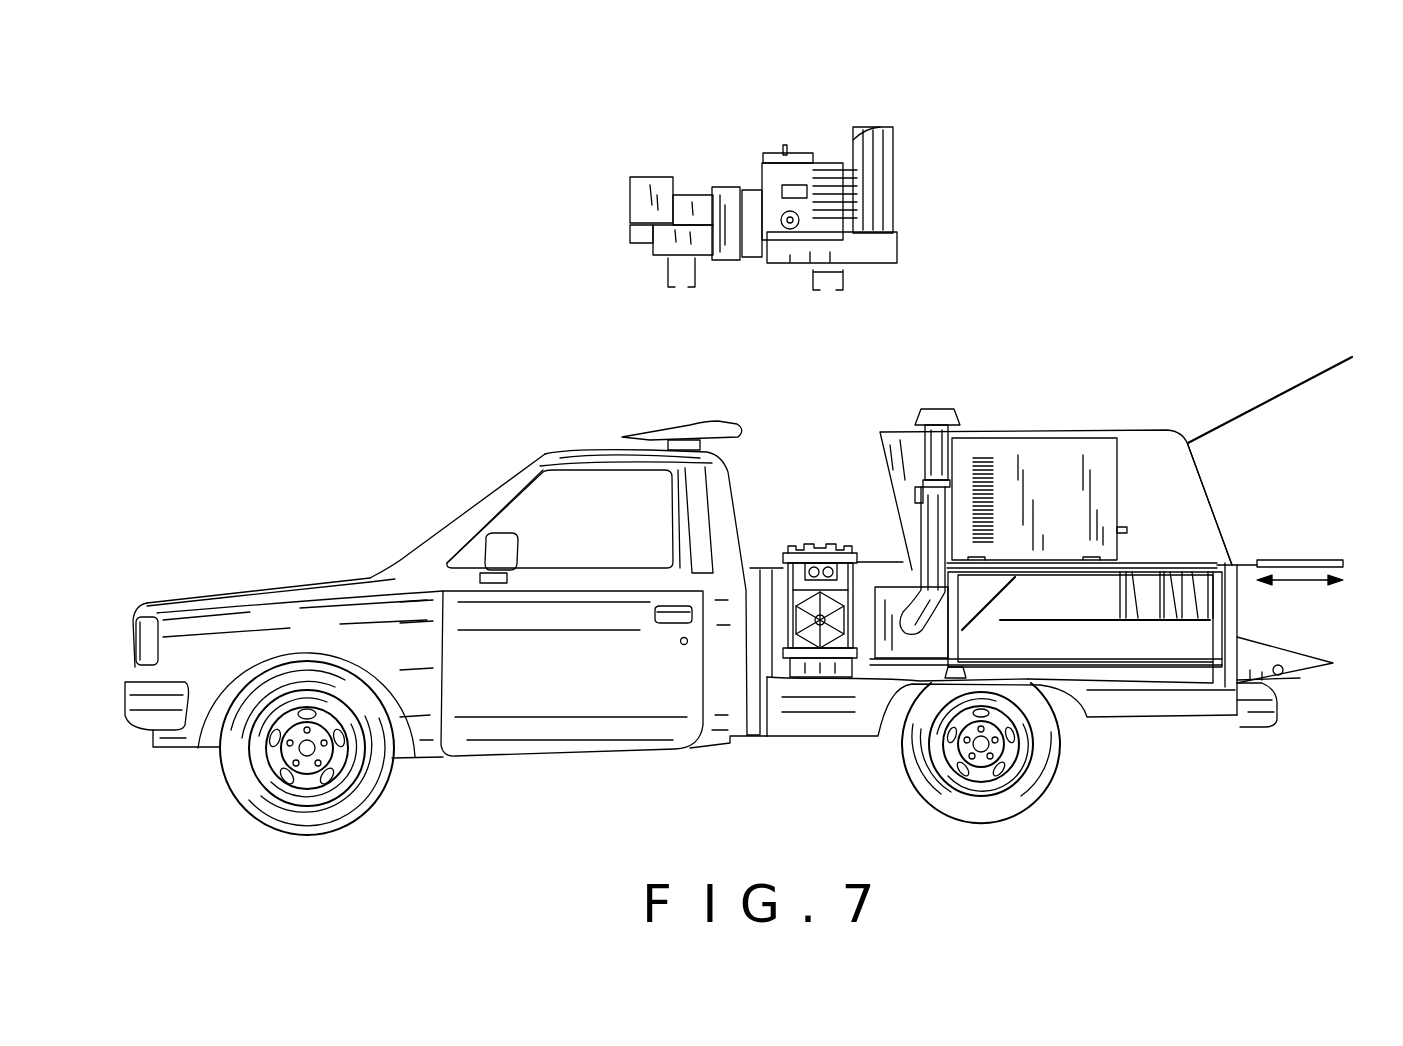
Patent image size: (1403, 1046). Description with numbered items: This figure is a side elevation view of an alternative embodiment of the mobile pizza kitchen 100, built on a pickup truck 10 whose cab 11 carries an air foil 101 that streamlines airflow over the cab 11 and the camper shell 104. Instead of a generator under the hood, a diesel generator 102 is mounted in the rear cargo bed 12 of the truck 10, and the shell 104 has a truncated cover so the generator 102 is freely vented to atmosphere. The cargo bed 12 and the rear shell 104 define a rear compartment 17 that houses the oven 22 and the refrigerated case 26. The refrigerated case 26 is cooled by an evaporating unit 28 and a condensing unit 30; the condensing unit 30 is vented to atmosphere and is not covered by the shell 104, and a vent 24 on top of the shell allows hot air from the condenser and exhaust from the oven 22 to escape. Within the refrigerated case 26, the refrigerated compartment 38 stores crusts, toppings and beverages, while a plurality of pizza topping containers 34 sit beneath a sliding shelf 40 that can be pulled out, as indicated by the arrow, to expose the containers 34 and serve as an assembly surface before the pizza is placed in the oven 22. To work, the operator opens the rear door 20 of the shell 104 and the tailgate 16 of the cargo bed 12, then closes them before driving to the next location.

The mobile pizza kitchen 100 is at (438, 420).
The pickup truck 10 is at (722, 720).
The cab 11 is at (600, 450).
The air foil 101 is at (705, 420).
The diesel generator 102 is at (873, 102).
The cargo bed 12 is at (837, 642).
The vent 24 is at (922, 408).
The condensing unit 30 is at (903, 642).
The camper shell 104 is at (1080, 430).
The rear compartment 17 is at (1190, 505).
The rear door 20 is at (1262, 403).
The oven 22 is at (1082, 503).
The evaporating unit 28 is at (1046, 625).
The refrigerated compartment 38 is at (1105, 636).
The refrigerated case 26 is at (1108, 669).
The pizza topping containers 34 is at (1145, 603).
The sliding shelf 40 is at (1292, 560).
The tailgate 16 is at (1297, 675).